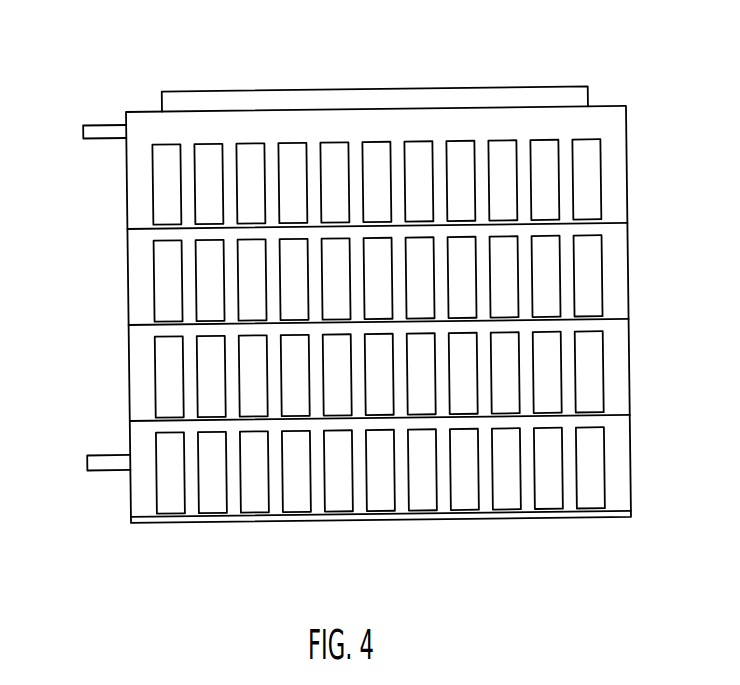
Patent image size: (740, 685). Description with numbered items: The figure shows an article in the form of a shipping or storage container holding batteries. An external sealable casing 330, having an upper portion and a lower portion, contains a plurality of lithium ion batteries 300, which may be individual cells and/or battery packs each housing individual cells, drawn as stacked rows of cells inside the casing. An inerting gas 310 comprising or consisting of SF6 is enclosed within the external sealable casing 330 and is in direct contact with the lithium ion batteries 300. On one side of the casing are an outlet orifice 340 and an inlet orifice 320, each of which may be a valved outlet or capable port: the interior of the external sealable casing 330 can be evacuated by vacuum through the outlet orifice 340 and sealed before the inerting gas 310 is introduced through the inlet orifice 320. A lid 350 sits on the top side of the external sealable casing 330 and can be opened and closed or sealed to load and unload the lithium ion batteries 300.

The lithium ion batteries 300 is at (288, 252).
The inerting gas 310 is at (140, 436).
The inlet orifice 320 is at (82, 464).
The external sealable casing 330 is at (363, 523).
The outlet orifice 340 is at (110, 139).
The lid 350 is at (488, 88).